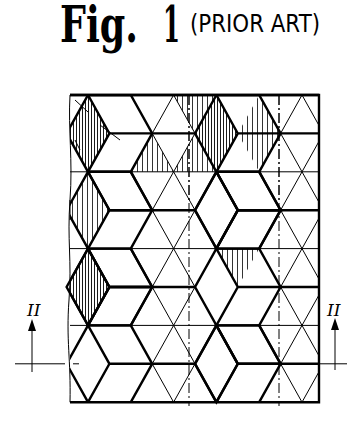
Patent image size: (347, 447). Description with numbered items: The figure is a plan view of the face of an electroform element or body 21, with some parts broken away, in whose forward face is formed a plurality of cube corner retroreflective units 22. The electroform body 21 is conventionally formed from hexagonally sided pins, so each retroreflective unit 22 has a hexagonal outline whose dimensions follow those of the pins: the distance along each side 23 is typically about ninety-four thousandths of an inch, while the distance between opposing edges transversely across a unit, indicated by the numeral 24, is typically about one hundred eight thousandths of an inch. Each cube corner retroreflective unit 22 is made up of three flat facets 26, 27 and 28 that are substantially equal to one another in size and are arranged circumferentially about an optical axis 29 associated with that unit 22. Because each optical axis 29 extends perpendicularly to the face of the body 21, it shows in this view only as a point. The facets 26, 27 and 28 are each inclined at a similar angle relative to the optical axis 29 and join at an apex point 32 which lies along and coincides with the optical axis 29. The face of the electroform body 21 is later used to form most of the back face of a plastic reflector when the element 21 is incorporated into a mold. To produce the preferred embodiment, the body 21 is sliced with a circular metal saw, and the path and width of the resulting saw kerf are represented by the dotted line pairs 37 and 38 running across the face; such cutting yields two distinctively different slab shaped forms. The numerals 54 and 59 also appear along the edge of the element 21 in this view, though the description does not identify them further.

The electroform element 21 is at (259, 84).
The cube corner retroreflective unit 22 is at (70, 213).
The side 23 is at (73, 107).
The distance between opposing edges 24 is at (146, 202).
The facet 26 is at (259, 202).
The facet 27 is at (262, 238).
The facet 28 is at (224, 220).
The optical axis 29 is at (111, 131).
The apex point 32 is at (72, 144).
The dotted line pair 37 is at (190, 91).
The dotted line pair 38 is at (285, 91).
The edge 54 is at (320, 246).
The edge 59 is at (320, 168).